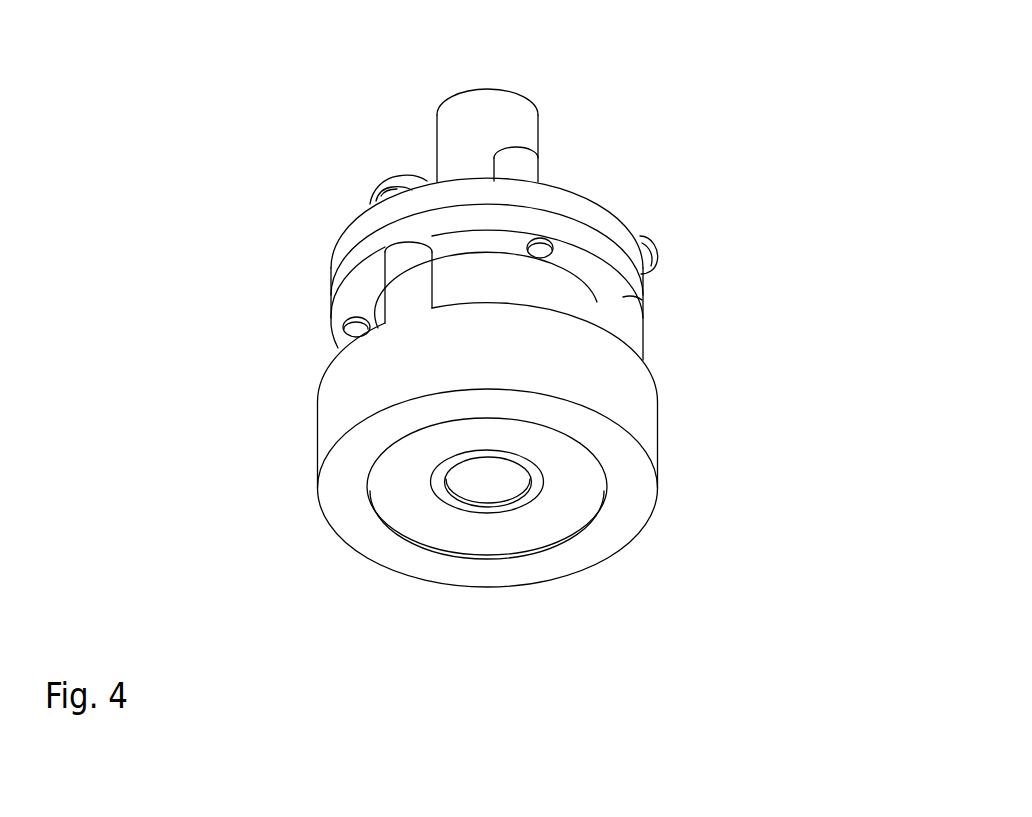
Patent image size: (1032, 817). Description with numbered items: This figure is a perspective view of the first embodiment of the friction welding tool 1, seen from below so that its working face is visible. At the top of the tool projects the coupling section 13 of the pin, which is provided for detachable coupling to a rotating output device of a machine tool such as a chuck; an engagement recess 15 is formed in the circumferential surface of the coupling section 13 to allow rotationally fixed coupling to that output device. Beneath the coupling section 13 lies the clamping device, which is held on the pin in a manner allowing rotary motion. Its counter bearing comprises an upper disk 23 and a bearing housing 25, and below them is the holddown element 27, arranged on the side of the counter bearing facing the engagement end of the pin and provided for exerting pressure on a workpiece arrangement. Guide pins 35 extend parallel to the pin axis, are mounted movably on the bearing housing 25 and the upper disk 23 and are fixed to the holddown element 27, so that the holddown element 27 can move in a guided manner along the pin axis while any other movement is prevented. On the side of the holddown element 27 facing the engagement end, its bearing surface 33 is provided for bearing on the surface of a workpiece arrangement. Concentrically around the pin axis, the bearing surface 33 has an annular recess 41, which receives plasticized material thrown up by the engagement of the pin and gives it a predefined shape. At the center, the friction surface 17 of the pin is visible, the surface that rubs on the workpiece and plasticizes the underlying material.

The friction welding tool 1 is at (695, 315).
The coupling section 13 is at (477, 130).
The engagement recess 15 is at (508, 163).
The friction surface 17 is at (490, 480).
The upper disk 23 is at (586, 217).
The bearing housing 25 is at (498, 288).
The holddown element 27 is at (498, 365).
The bearing surface 33 is at (345, 479).
The guide pins 35 is at (400, 272).
The annular recess 41 is at (433, 512).